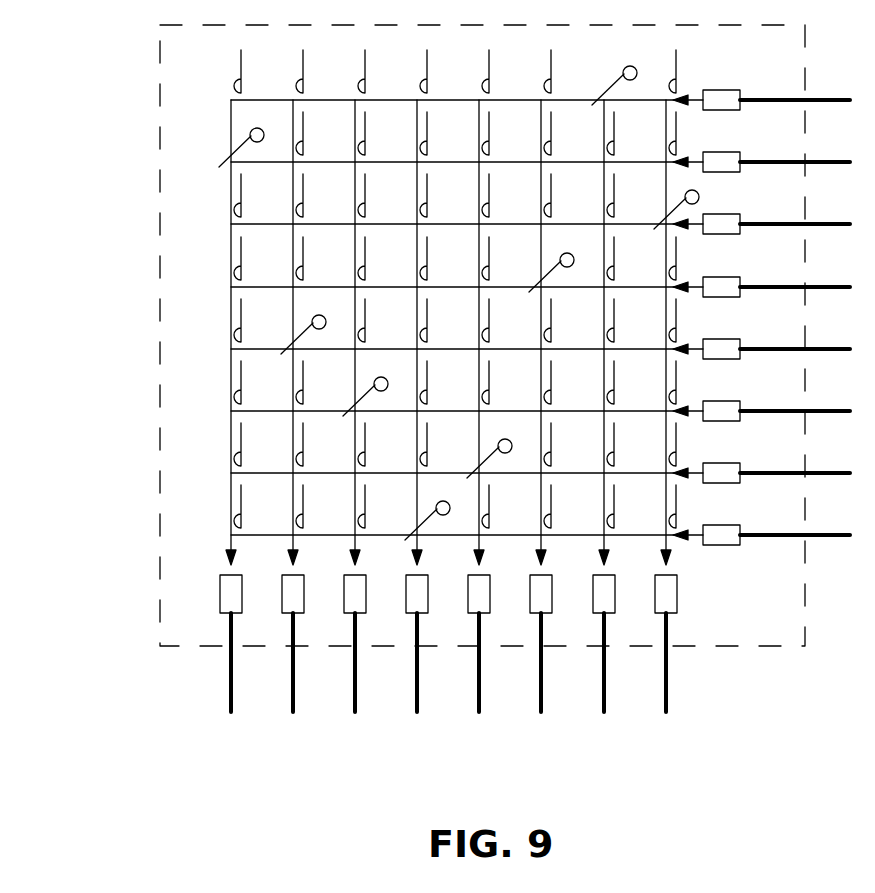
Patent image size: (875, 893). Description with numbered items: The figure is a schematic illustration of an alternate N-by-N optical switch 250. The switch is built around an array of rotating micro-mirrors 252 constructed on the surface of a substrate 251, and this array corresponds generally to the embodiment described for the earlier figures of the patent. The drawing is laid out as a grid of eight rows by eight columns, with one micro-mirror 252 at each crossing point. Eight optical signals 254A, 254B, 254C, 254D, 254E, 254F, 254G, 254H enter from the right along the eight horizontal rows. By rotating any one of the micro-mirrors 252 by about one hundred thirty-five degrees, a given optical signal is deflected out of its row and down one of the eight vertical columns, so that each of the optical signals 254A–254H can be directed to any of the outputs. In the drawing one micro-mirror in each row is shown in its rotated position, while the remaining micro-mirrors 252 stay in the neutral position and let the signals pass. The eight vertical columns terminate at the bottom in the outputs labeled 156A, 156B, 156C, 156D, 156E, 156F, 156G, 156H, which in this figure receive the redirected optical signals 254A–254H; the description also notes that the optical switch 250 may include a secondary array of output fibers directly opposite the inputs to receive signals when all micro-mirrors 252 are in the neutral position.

The optical switch 250 is at (443, 403).
The substrate 251 is at (750, 668).
The rotating micro-mirrors 252 is at (182, 327).
The optical signal 254A is at (688, 98).
The optical signal 254B is at (688, 160).
The optical signal 254C is at (688, 222).
The optical signal 254D is at (688, 285).
The optical signal 254E is at (688, 347).
The optical signal 254F is at (688, 409).
The optical signal 254G is at (688, 471).
The optical signal 254H is at (688, 533).
The column output line 156A is at (666, 692).
The column output line 156B is at (604, 695).
The column output line 156C is at (541, 692).
The column output line 156D is at (479, 695).
The column output line 156E is at (417, 692).
The column output line 156F is at (355, 695).
The column output line 156G is at (293, 692).
The column output line 156H is at (231, 695).